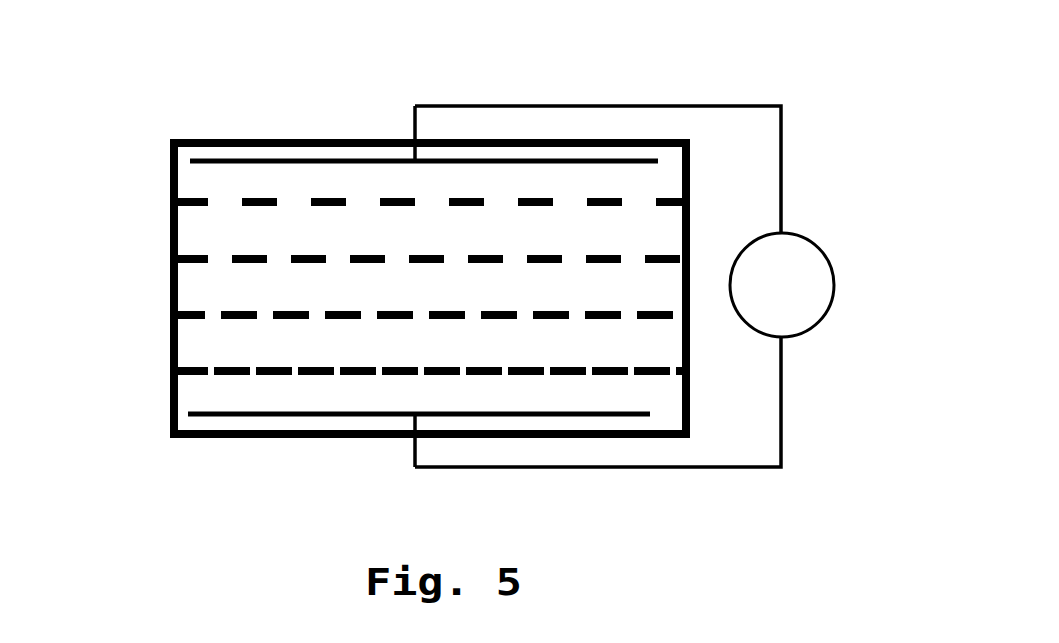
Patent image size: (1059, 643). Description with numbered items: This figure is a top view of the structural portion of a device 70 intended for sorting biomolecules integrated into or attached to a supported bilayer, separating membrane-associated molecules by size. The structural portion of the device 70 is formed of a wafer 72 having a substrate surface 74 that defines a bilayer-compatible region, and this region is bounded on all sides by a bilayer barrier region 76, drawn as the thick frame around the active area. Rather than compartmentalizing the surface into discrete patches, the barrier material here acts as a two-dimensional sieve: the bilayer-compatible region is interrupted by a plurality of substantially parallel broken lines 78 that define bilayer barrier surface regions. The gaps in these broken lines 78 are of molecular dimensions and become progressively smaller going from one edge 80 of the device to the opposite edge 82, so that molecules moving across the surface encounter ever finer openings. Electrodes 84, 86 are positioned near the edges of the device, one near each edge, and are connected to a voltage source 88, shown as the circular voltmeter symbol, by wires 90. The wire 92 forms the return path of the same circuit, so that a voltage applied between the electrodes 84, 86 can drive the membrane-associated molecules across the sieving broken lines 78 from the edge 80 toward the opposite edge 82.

The device 70 is at (178, 74).
The wafer 72 is at (248, 134).
The substrate surface 74 is at (199, 347).
The bilayer barrier region 76 is at (333, 143).
The broken lines 78 is at (174, 209).
The edge 80 is at (427, 101).
The opposite edge 82 is at (416, 472).
The electrode 84 is at (268, 160).
The electrode 86 is at (272, 416).
The voltage source 88 is at (822, 274).
The wires 90 is at (607, 106).
The lower lead 92 is at (650, 469).